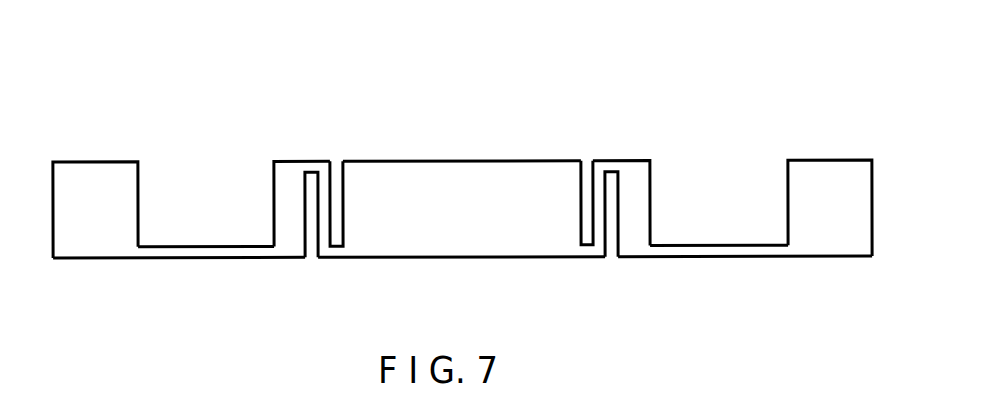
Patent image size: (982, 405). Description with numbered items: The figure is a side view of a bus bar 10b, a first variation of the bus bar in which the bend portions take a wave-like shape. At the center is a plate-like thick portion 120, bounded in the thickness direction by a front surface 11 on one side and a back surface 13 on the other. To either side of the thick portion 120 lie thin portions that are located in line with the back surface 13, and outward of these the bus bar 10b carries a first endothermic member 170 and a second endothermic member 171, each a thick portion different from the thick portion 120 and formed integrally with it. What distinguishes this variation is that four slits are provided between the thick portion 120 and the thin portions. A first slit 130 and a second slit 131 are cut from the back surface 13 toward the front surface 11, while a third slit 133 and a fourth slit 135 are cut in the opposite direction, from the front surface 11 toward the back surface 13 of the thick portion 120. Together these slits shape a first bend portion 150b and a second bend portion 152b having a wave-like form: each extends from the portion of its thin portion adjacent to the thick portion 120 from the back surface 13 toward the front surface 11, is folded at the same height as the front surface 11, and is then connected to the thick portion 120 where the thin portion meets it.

The bus bar 10b is at (462, 168).
The front surface 11 is at (462, 161).
The back surface 13 is at (462, 257).
The thick portion 120 is at (462, 161).
The first slit 130 is at (311, 214).
The second slit 131 is at (611, 214).
The third slit 133 is at (336, 203).
The fourth slit 135 is at (587, 203).
The first bend portion 150b is at (302, 203).
The second bend portion 152b is at (621, 203).
The first endothermic member 170 is at (95, 210).
The second endothermic member 171 is at (830, 208).